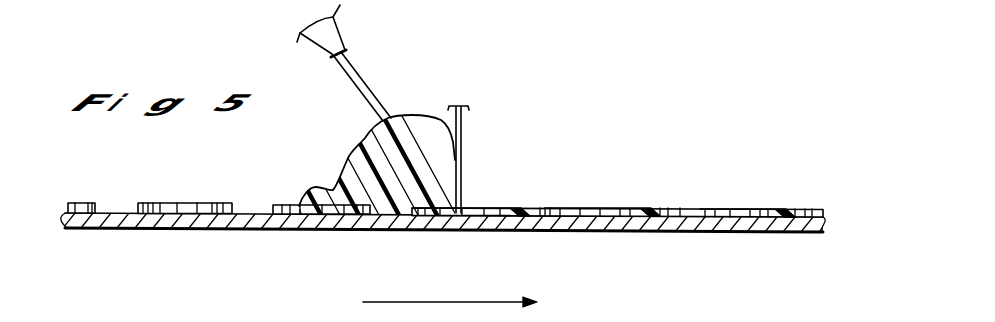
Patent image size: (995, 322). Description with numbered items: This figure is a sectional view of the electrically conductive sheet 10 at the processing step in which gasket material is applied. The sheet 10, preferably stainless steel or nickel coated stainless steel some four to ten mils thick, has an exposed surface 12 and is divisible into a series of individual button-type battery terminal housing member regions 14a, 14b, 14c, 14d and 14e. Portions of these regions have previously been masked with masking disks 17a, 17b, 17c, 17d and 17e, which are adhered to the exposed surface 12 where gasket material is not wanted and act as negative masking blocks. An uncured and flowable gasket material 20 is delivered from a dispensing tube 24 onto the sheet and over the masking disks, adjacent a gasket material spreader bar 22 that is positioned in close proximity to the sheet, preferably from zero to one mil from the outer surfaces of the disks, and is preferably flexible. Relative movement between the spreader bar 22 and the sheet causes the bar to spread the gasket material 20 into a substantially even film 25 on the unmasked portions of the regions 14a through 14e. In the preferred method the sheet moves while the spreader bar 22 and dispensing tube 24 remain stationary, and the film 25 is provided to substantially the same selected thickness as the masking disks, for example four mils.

The electrically conductive sheet 10 is at (446, 143).
The exposed surface 12 is at (111, 208).
The button-type battery terminal housing member region 14a is at (170, 229).
The button-type battery terminal housing member region 14b is at (300, 229).
The button-type battery terminal housing member region 14c is at (440, 230).
The button-type battery terminal housing member region 14d is at (565, 231).
The button-type battery terminal housing member region 14e is at (708, 232).
The masking disk 17a is at (244, 181).
The masking disk 17b is at (318, 175).
The masking disk 17c is at (517, 175).
The masking disk 17d is at (632, 182).
The masking disk 17e is at (785, 179).
The gasket material 20 is at (410, 130).
The gasket material spreader bar 22 is at (467, 140).
The dispensing tube 24 is at (353, 72).
The film 25 is at (525, 210).